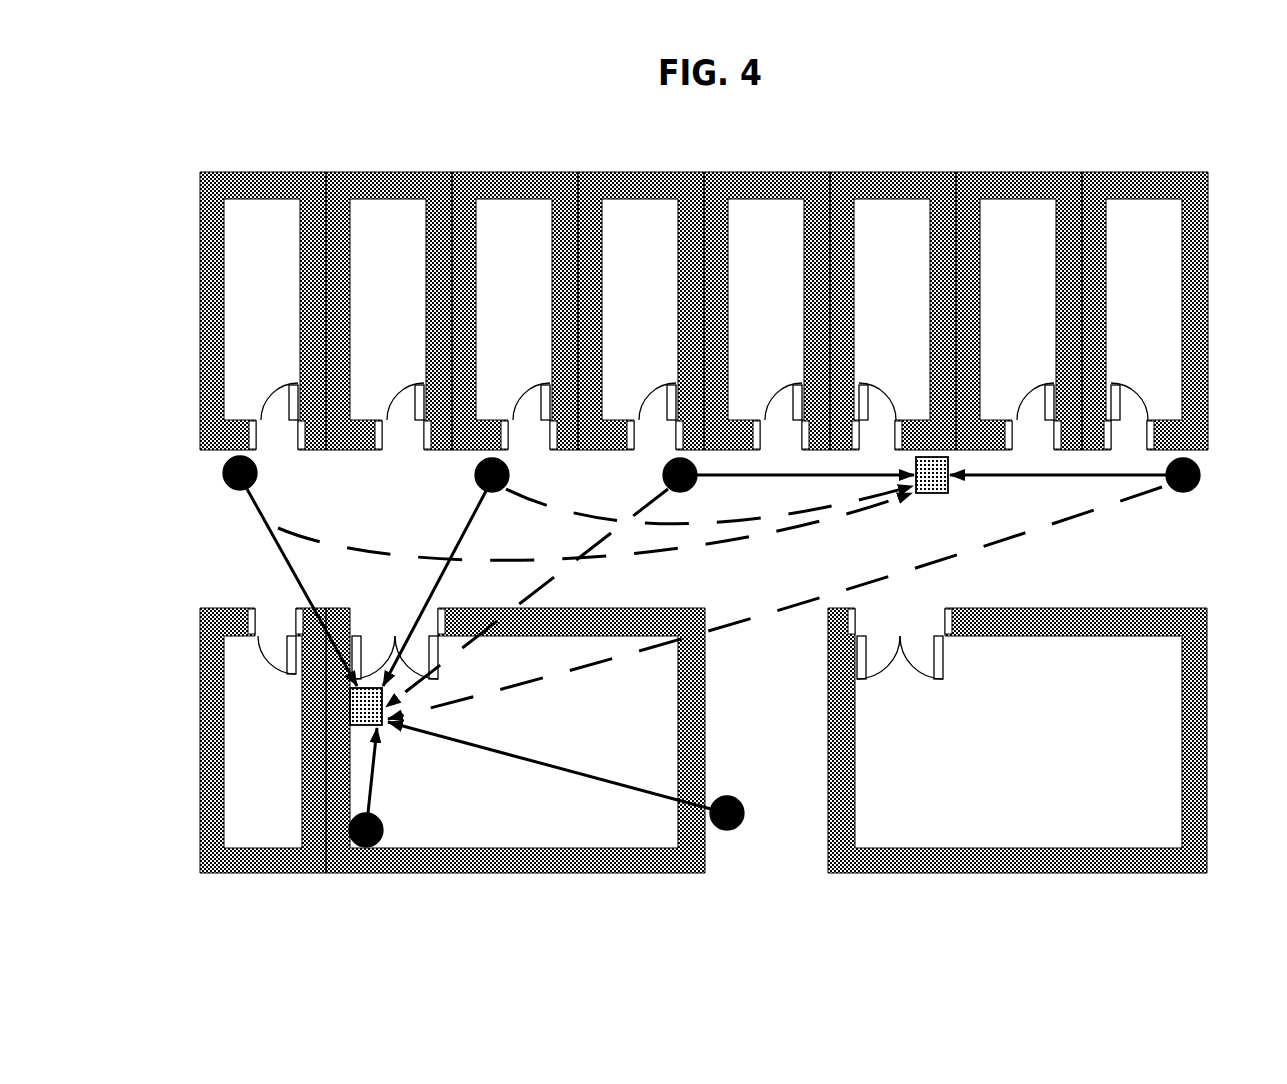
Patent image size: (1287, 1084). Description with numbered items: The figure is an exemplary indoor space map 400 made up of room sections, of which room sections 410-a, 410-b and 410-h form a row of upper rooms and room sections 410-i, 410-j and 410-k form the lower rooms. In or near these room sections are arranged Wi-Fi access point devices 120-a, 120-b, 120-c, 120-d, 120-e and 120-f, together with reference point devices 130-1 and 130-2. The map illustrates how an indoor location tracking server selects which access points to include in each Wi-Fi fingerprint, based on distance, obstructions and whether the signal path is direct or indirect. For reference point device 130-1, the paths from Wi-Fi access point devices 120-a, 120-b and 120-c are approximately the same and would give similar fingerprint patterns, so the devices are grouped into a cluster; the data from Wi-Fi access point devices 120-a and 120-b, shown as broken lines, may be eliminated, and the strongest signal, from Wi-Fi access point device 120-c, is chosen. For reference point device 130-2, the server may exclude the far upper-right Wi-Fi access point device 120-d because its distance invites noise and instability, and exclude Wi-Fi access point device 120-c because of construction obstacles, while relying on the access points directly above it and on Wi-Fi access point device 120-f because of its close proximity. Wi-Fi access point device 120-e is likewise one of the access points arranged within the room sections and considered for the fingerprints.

The indoor space map 400 is at (226, 78).
The room section 410-a is at (263, 172).
The room section 410-b is at (403, 172).
The room section 410-h is at (1153, 172).
The room section 410-i is at (262, 873).
The room section 410-j is at (508, 873).
The room section 410-k is at (975, 873).
The Wi-Fi access point device 120-a is at (222, 484).
The Wi-Fi access point device 120-b is at (476, 476).
The Wi-Fi access point device 120-c is at (662, 475).
The Wi-Fi access point device 120-d is at (1198, 470).
The Wi-Fi access point device 120-e is at (390, 806).
The Wi-Fi access point device 120-f is at (742, 804).
The reference point device 130-1 is at (930, 494).
The reference point device 130-2 is at (384, 702).